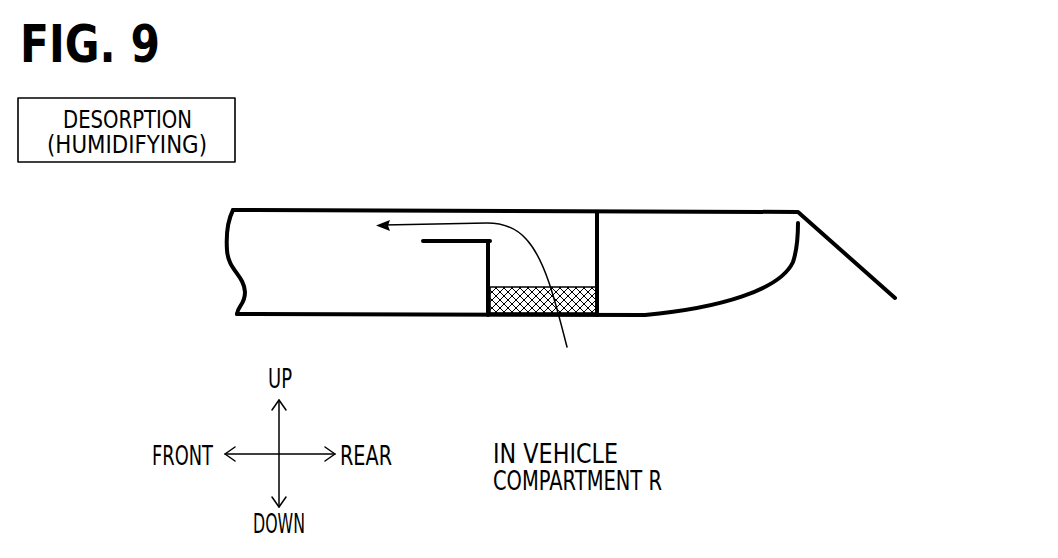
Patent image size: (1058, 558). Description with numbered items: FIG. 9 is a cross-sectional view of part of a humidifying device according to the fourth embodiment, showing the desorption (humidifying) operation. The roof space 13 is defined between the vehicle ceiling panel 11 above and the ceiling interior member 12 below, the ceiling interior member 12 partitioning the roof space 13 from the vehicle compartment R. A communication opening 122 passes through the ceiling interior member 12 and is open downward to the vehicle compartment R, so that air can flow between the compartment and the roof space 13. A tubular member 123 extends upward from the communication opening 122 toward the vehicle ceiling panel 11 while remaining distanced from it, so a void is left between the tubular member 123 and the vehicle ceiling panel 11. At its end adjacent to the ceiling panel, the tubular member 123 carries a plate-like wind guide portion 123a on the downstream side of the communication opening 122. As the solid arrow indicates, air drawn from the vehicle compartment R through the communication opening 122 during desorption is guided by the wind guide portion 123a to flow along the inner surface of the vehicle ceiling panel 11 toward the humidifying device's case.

The vehicle ceiling panel 11 is at (377, 210).
The ceiling interior member 12 is at (342, 316).
The roof space 13 is at (302, 243).
The communication opening 122 is at (500, 312).
The tubular member 123 is at (487, 262).
The wind guide portion 123a is at (430, 243).